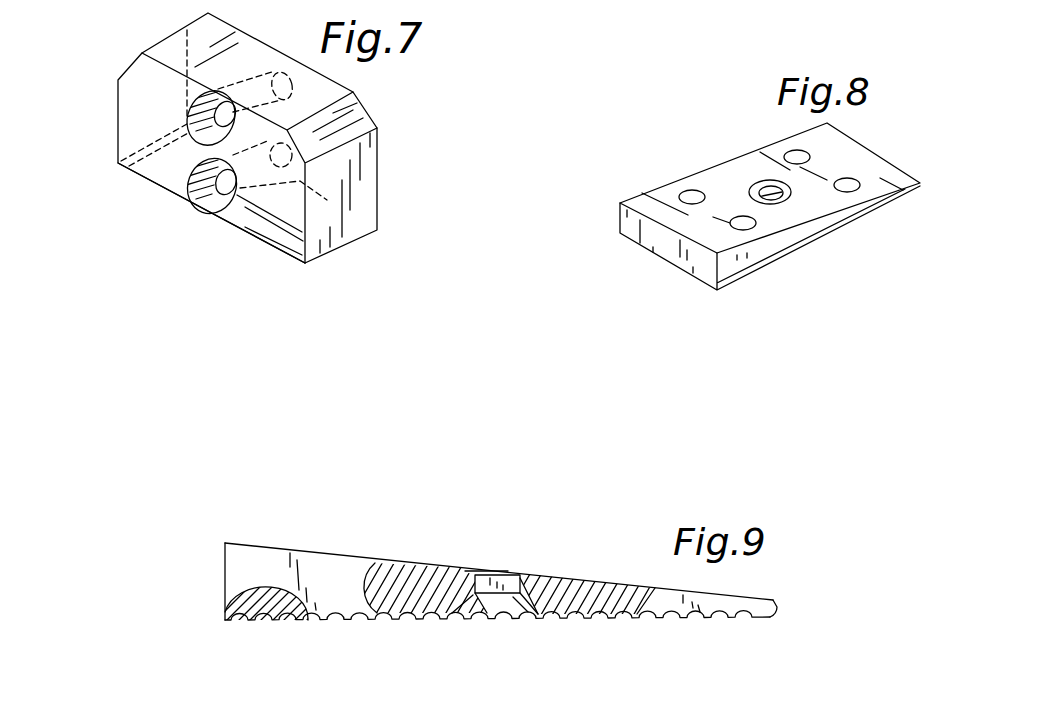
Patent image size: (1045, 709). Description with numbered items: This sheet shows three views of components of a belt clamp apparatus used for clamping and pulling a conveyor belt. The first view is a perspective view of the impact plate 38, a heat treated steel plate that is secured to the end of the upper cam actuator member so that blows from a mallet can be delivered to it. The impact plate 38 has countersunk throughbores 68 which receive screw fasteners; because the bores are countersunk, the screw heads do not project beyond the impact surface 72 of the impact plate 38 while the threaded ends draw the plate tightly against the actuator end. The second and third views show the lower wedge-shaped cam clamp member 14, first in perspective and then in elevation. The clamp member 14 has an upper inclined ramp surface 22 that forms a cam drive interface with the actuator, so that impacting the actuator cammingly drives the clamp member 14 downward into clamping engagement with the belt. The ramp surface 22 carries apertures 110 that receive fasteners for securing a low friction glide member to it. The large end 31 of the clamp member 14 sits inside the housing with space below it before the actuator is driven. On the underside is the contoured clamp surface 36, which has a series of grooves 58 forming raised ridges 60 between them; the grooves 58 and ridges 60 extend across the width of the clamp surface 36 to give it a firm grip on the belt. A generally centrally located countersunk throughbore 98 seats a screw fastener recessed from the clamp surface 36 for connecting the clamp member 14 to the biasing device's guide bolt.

In FIG. 7, the impact plate 38 is at (332, 268).
In FIG. 7, the countersunk throughbores 68 is at (186, 125).
In FIG. 7, the impact surface 72 is at (143, 170).
In FIG. 8, the clamp member 14 is at (820, 253).
In FIG. 8, the apertures 110 is at (688, 195).
In FIG. 9, the large end 31 is at (268, 525).
In FIG. 9, the inclined ramp surface 22 is at (333, 555).
In FIG. 9, the raised ridges 60 is at (335, 623).
In FIG. 9, the countersunk throughbore 98 is at (483, 604).
In FIG. 9, the clamp surface 36 is at (535, 635).
In FIG. 9, the grooves 58 is at (653, 617).